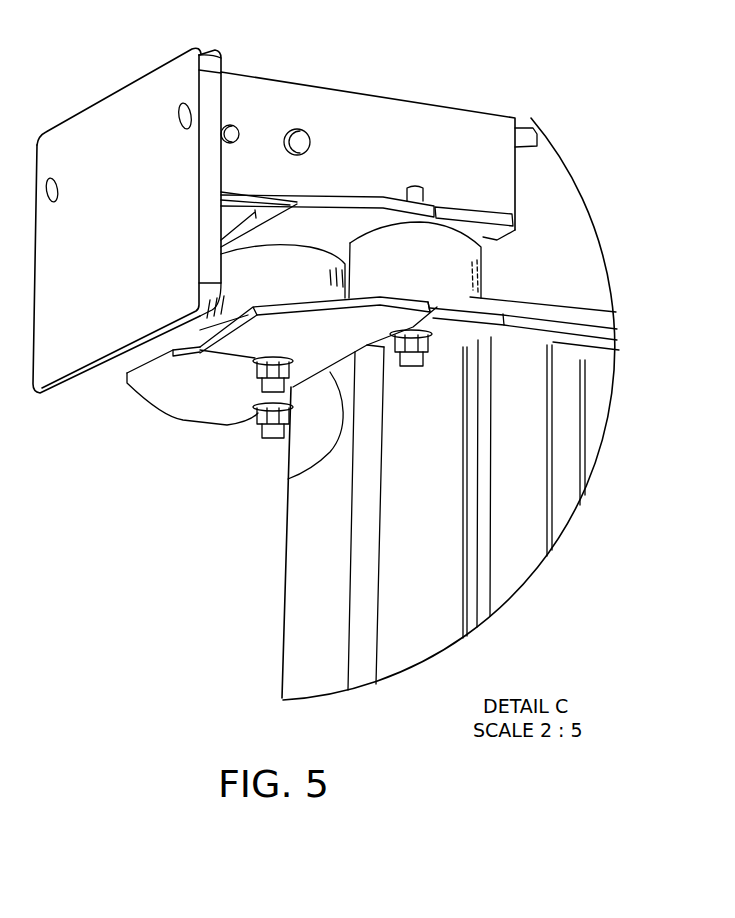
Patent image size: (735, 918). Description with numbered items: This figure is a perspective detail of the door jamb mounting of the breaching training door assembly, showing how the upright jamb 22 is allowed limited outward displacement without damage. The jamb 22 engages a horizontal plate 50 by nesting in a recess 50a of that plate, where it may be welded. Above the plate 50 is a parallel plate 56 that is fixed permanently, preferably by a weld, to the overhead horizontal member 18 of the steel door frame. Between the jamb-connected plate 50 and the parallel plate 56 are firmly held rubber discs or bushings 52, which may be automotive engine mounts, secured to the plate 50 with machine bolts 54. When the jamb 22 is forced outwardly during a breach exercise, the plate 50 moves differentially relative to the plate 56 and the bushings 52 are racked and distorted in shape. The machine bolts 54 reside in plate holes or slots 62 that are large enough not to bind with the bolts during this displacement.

The overhead horizontal member 18 is at (535, 187).
The upright jamb 22 is at (357, 522).
The horizontal plate 50 is at (194, 398).
The recess 50a is at (347, 442).
The rubber bushings 52 is at (483, 265).
The machine bolts 54 is at (427, 193).
The parallel plate 56 is at (343, 207).
The plate holes or slots 62 is at (440, 318).